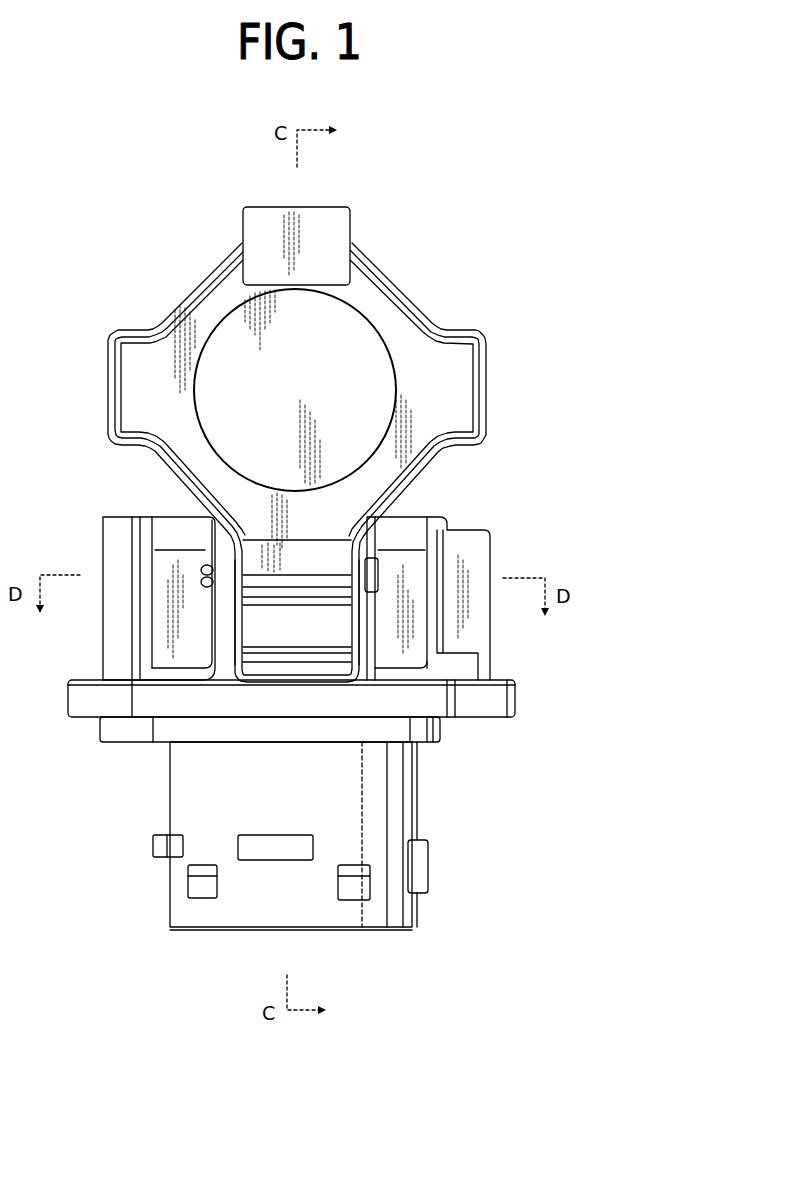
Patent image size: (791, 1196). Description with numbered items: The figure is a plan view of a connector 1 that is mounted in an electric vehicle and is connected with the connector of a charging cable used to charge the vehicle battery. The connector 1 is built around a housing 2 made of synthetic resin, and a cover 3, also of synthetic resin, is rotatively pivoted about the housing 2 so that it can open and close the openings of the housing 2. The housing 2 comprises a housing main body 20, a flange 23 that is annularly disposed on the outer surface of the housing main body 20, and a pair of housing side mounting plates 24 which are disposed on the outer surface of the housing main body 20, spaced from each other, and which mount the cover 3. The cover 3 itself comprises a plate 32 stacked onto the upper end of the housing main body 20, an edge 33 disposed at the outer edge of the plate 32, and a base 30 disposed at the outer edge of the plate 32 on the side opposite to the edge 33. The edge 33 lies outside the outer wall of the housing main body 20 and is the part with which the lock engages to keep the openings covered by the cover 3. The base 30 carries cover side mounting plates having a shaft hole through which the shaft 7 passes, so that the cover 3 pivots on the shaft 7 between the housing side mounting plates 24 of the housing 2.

The connector 1 is at (573, 200).
The housing 2 is at (413, 795).
The cover 3 is at (489, 372).
The shaft 7 is at (378, 582).
The housing main body 20 is at (168, 877).
The flange 23 is at (92, 700).
The housing side mounting plates 24 is at (357, 617).
The base 30 is at (298, 573).
The plate 32 is at (315, 372).
The edge 33 is at (300, 208).